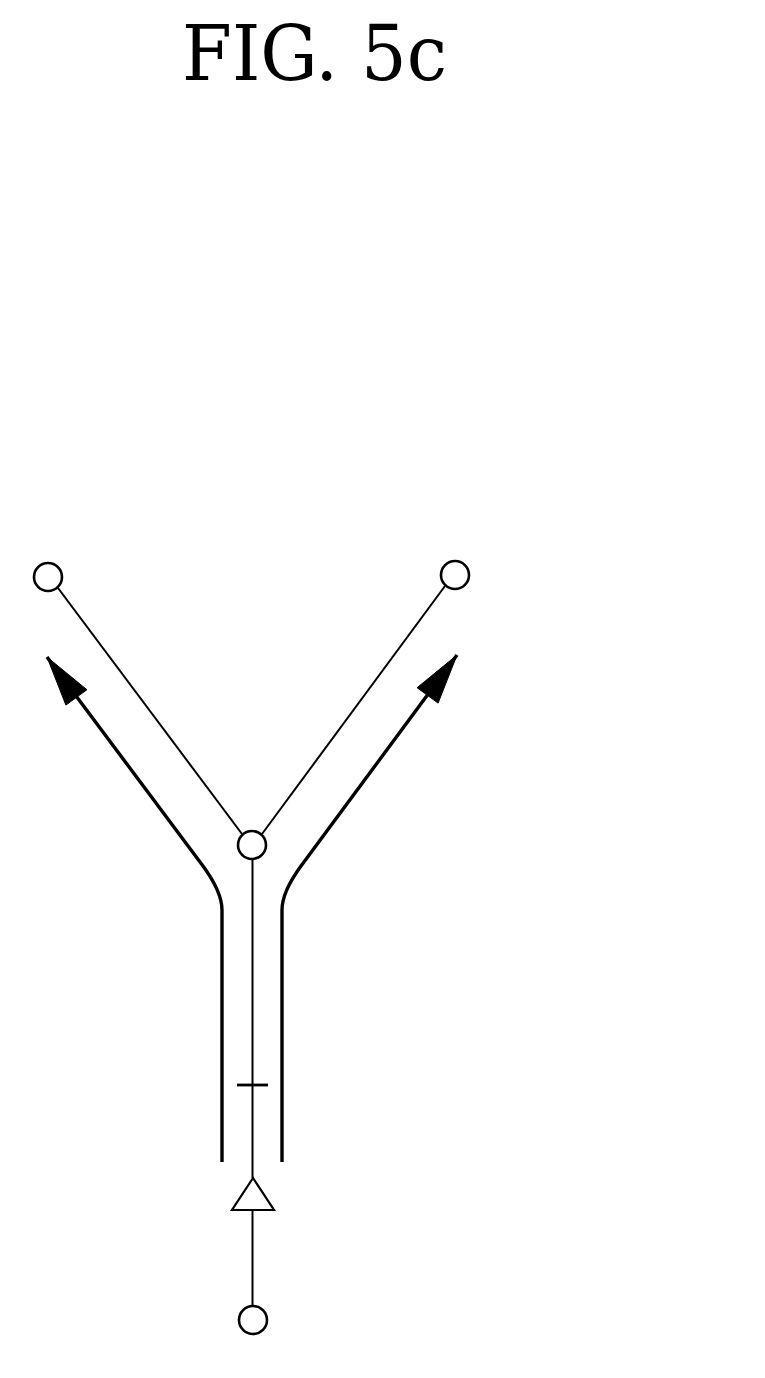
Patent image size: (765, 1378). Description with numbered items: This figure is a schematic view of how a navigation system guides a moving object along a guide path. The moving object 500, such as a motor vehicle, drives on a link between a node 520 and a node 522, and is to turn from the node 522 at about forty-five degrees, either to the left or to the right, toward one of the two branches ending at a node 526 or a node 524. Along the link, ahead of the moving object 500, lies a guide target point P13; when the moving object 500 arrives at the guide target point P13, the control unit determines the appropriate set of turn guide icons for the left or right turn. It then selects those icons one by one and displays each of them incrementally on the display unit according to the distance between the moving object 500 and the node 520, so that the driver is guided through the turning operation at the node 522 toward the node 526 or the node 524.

The moving object 500 is at (262, 1190).
The node 520 is at (267, 1315).
The node 522 is at (266, 840).
The right output node 524 is at (468, 562).
The left output node 526 is at (62, 567).
The guide target point P13 is at (253, 1084).